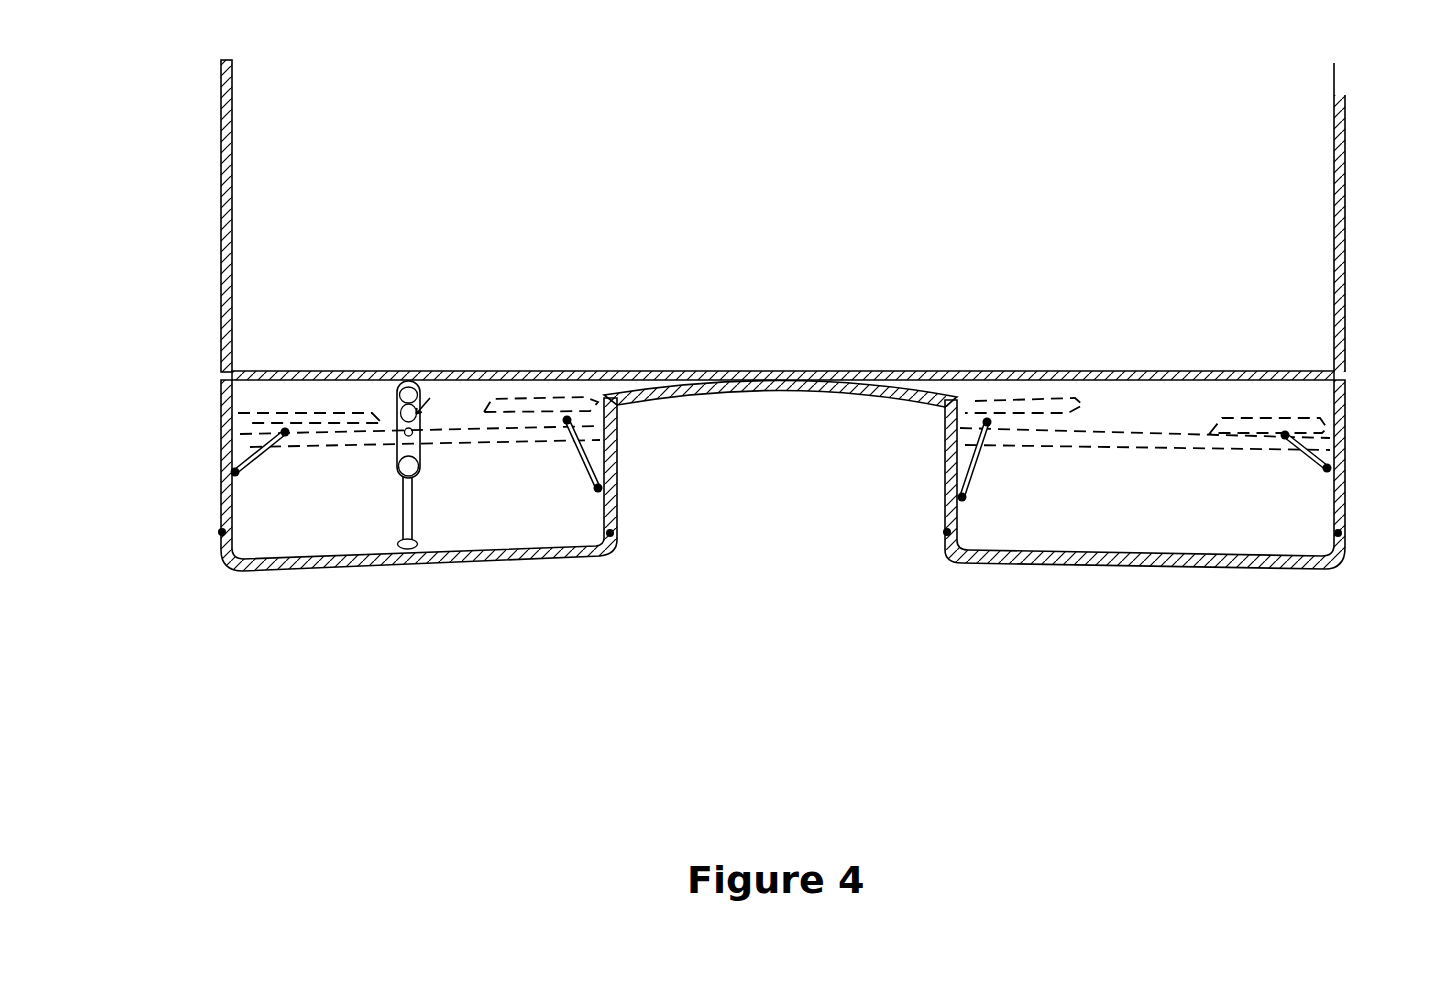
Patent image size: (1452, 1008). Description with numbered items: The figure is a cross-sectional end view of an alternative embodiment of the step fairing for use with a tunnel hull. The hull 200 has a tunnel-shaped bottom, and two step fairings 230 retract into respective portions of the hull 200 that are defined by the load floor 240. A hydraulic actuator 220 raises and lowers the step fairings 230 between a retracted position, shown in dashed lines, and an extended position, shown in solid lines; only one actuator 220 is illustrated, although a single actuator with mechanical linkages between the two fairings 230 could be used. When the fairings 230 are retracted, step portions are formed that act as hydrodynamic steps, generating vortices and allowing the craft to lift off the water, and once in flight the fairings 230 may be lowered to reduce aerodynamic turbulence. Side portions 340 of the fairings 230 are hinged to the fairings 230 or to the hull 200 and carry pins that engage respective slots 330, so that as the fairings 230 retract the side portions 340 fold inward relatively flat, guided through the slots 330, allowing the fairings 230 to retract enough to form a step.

The hull 200 is at (1316, 255).
The hydraulic actuator 220 is at (395, 417).
The step fairing 230 is at (433, 574).
The load floor 240 is at (626, 369).
The slot 330 is at (222, 448).
The side portion 340 is at (206, 500).